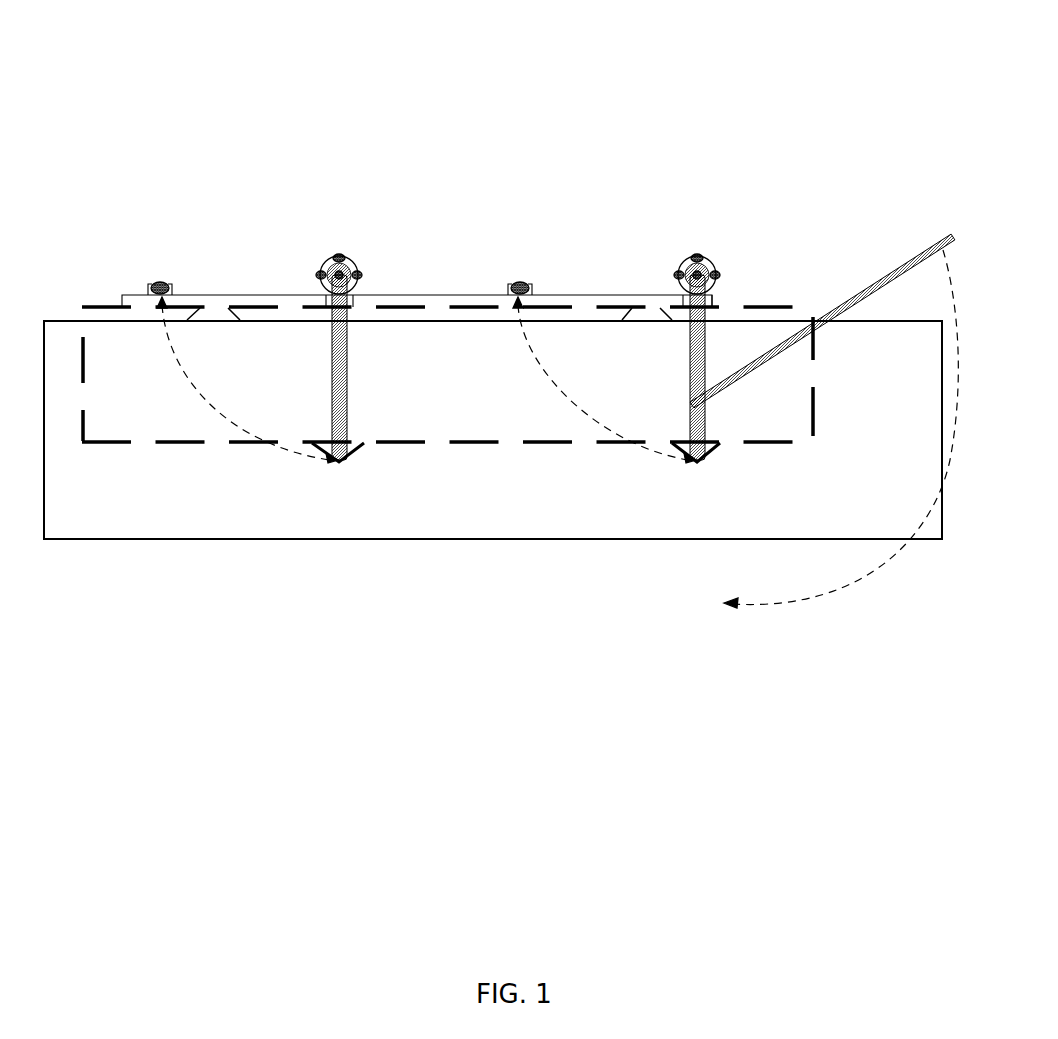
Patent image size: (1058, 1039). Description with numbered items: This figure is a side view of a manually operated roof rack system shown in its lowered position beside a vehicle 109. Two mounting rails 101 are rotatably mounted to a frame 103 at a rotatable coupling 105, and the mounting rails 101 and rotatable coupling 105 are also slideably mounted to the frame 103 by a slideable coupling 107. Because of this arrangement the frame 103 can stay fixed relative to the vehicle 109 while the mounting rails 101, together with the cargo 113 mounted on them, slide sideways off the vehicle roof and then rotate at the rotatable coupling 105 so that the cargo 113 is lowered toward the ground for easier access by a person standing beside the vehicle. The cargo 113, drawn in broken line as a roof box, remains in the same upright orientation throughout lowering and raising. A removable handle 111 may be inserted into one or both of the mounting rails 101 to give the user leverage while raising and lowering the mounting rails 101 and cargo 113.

The mounting rail 101 is at (683, 450).
The frame 103 is at (438, 300).
The rotatable coupling 105 is at (690, 273).
The slideable coupling 107 is at (167, 283).
The vehicle 109 is at (200, 512).
The removable handle 111 is at (847, 297).
The cargo 113 is at (128, 378).